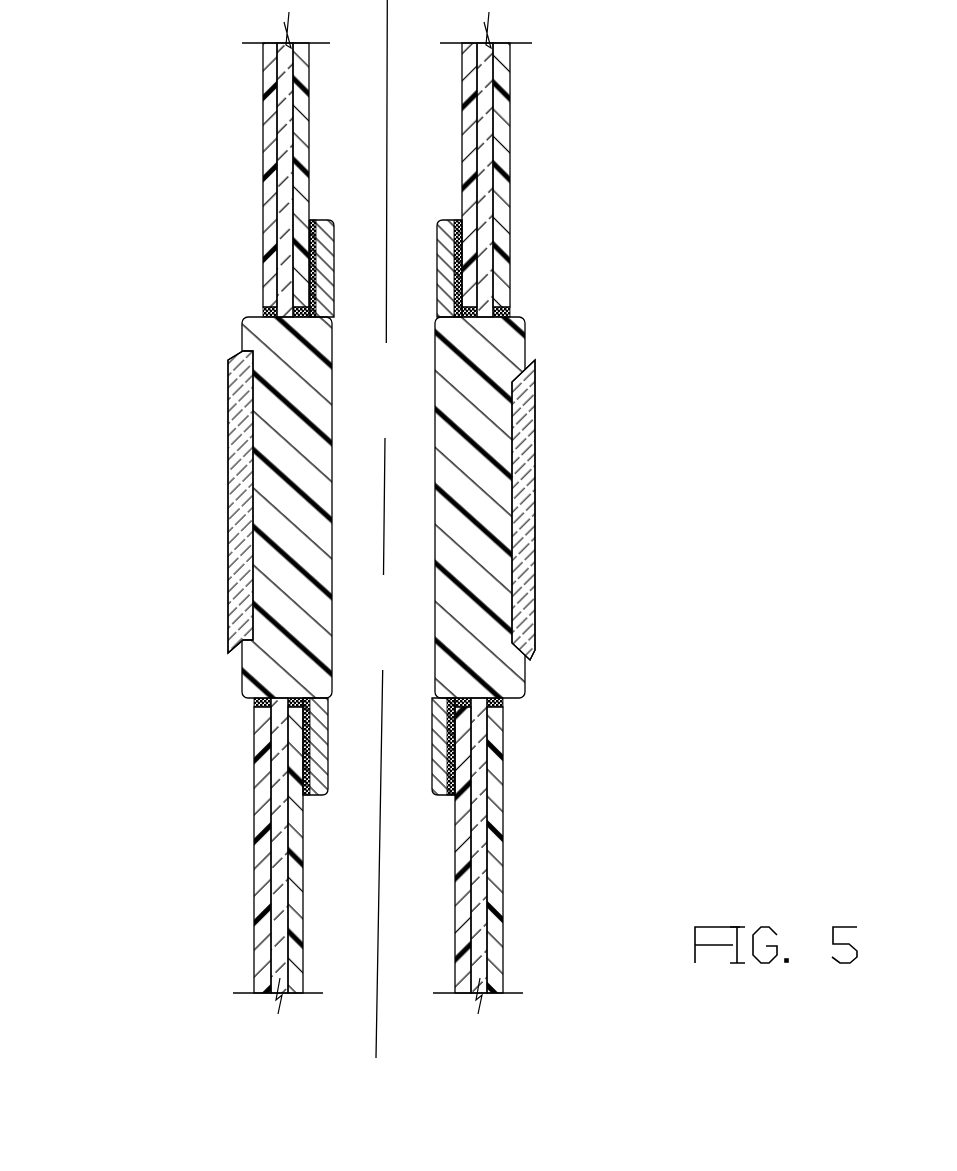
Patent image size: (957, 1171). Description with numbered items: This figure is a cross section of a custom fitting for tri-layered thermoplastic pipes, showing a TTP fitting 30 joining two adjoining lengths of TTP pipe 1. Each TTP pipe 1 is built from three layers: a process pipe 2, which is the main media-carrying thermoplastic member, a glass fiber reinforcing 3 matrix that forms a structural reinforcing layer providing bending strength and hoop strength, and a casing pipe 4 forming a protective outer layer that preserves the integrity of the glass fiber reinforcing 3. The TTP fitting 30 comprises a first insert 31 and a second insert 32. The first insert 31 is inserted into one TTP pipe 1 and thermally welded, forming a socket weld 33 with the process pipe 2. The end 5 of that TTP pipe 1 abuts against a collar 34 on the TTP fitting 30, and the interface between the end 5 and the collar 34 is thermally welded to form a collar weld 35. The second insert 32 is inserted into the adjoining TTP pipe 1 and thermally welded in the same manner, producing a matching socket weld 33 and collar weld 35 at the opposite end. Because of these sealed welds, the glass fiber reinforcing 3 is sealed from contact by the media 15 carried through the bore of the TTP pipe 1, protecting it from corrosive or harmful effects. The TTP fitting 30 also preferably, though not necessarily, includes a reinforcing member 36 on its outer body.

The TTP pipe 1 is at (160, 861).
The process pipe 2 is at (305, 108).
The glass fiber reinforcing 3 is at (278, 97).
The casing pipe 4 is at (275, 143).
The end 5 is at (490, 294).
The media 15 is at (372, 544).
The TTP fitting 30 is at (240, 440).
The first insert 31 is at (325, 240).
The second insert 32 is at (313, 745).
The socket weld 33 is at (318, 268).
The collar 34 is at (262, 305).
The collar weld 35 is at (262, 712).
The reinforcing member 36 is at (243, 589).